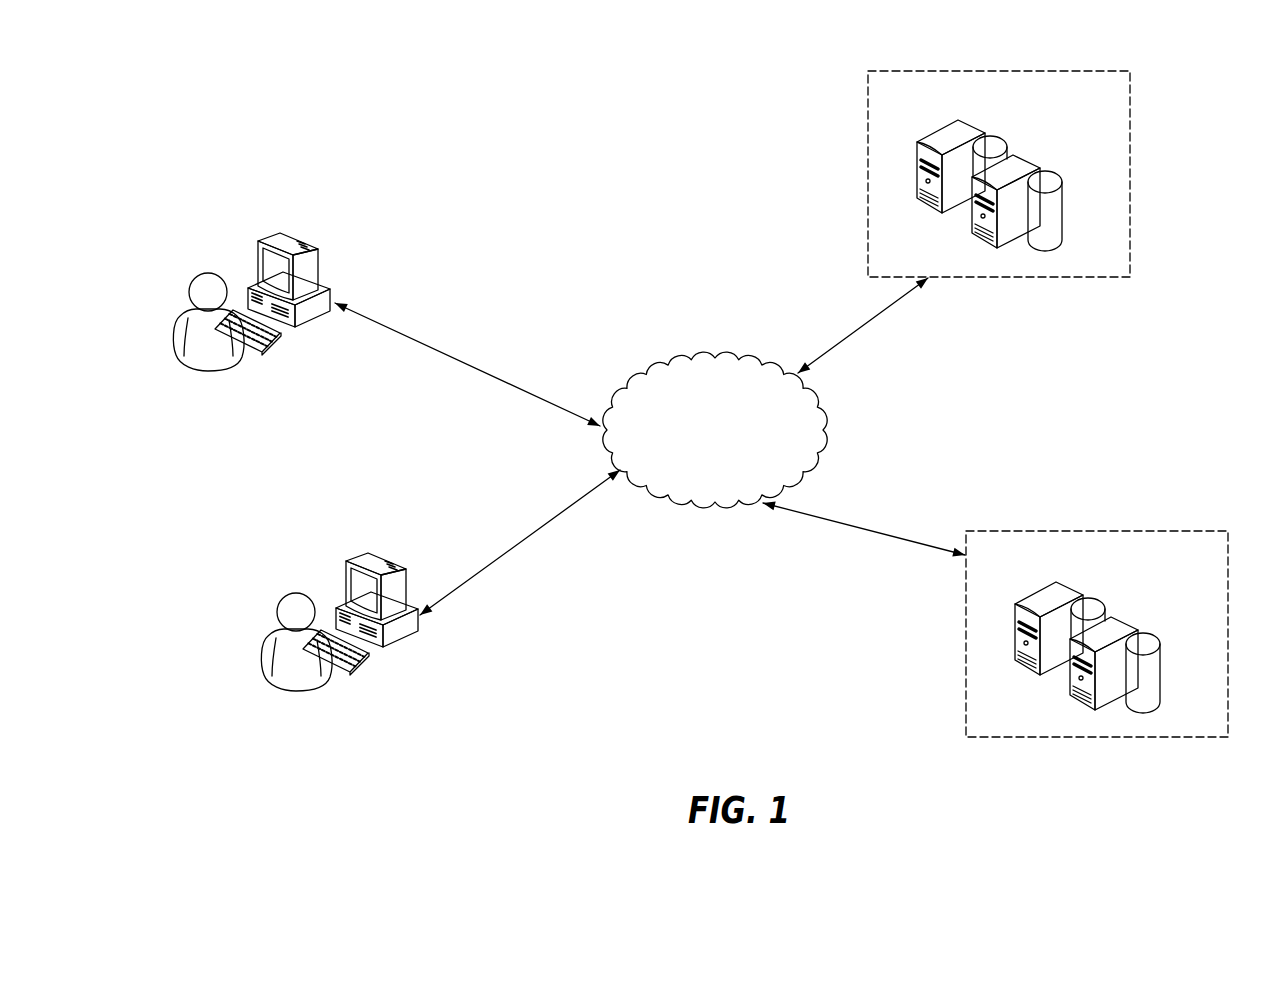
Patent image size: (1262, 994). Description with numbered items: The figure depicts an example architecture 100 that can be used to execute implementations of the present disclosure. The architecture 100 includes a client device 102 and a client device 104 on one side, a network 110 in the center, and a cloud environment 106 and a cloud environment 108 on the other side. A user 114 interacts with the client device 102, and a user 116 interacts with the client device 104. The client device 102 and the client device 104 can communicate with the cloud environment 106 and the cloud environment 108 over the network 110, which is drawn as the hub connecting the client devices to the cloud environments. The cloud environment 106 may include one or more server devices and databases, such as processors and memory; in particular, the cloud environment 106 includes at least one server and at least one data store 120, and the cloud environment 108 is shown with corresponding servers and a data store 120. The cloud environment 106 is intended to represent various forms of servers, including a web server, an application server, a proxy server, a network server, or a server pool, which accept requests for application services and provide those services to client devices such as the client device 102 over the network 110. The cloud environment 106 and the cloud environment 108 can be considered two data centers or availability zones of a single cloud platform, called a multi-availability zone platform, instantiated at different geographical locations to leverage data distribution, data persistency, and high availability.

The example architecture 100 is at (568, 118).
The client device 102 is at (262, 240).
The client device 104 is at (350, 560).
The cloud environment 106 is at (1131, 172).
The cloud environment 108 is at (965, 633).
The network 110 is at (713, 355).
The user 114 is at (208, 370).
The user 116 is at (296, 690).
The data store 120 is at (1010, 148).